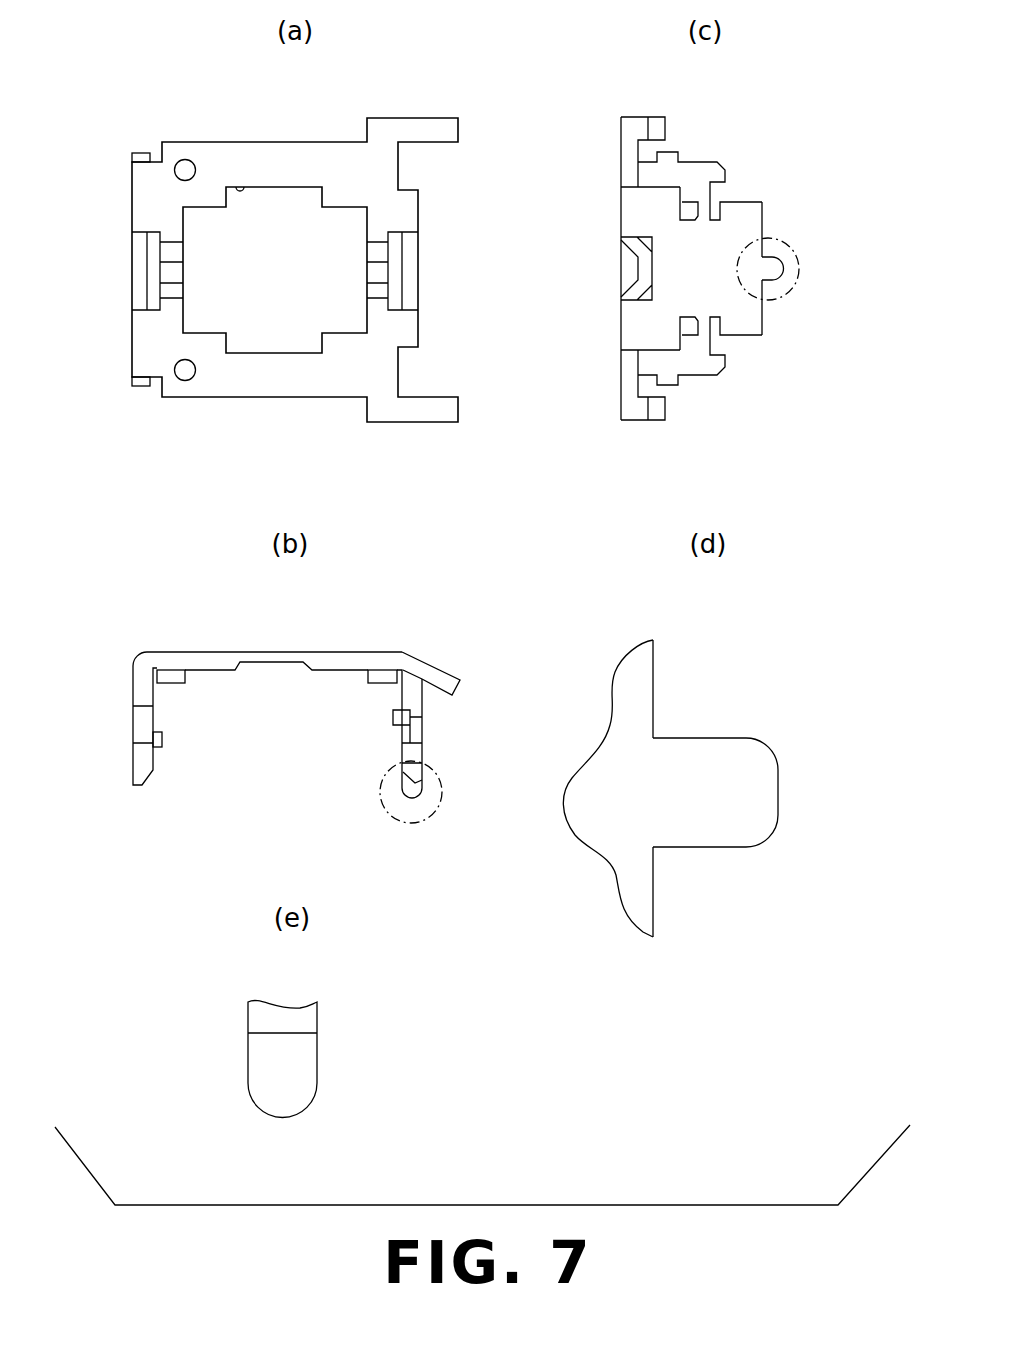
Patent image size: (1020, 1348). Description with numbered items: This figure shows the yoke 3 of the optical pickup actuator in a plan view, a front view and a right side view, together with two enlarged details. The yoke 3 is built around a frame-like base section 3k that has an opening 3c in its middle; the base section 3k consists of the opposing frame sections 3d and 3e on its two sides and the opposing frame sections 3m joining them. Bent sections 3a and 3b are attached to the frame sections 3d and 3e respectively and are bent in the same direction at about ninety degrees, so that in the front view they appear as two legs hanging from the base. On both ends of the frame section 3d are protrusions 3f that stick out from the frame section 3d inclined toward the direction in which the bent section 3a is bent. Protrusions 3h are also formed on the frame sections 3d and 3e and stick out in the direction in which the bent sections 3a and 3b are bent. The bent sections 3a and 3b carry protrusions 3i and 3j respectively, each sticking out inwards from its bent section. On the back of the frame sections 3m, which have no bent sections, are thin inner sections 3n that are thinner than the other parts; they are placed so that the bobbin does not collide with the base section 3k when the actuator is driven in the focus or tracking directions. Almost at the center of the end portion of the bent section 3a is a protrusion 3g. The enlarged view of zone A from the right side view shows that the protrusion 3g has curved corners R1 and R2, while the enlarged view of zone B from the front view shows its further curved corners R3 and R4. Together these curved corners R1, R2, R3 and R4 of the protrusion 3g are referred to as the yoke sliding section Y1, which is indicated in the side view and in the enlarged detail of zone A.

The yoke 3 is at (197, 142).
The bent section 3a is at (418, 205).
The bent section 3b is at (130, 202).
The opening 3c is at (238, 186).
The frame section 3d is at (408, 328).
The frame section 3e is at (147, 345).
The protrusion 3f is at (448, 133).
The protrusion 3g is at (412, 797).
The protrusion 3h is at (172, 270).
The protrusion 3i is at (393, 718).
The protrusion 3j is at (160, 737).
The base section 3k is at (330, 157).
The frame section 3m is at (273, 157).
The thin inner section 3n is at (272, 663).
The yoke sliding section Y1 is at (790, 266).
The zone A is at (797, 283).
The zone B is at (383, 807).
The curved corner R1 is at (771, 752).
The curved corner R2 is at (773, 834).
The curved corner R3 is at (313, 1108).
The curved corner R4 is at (254, 1108).